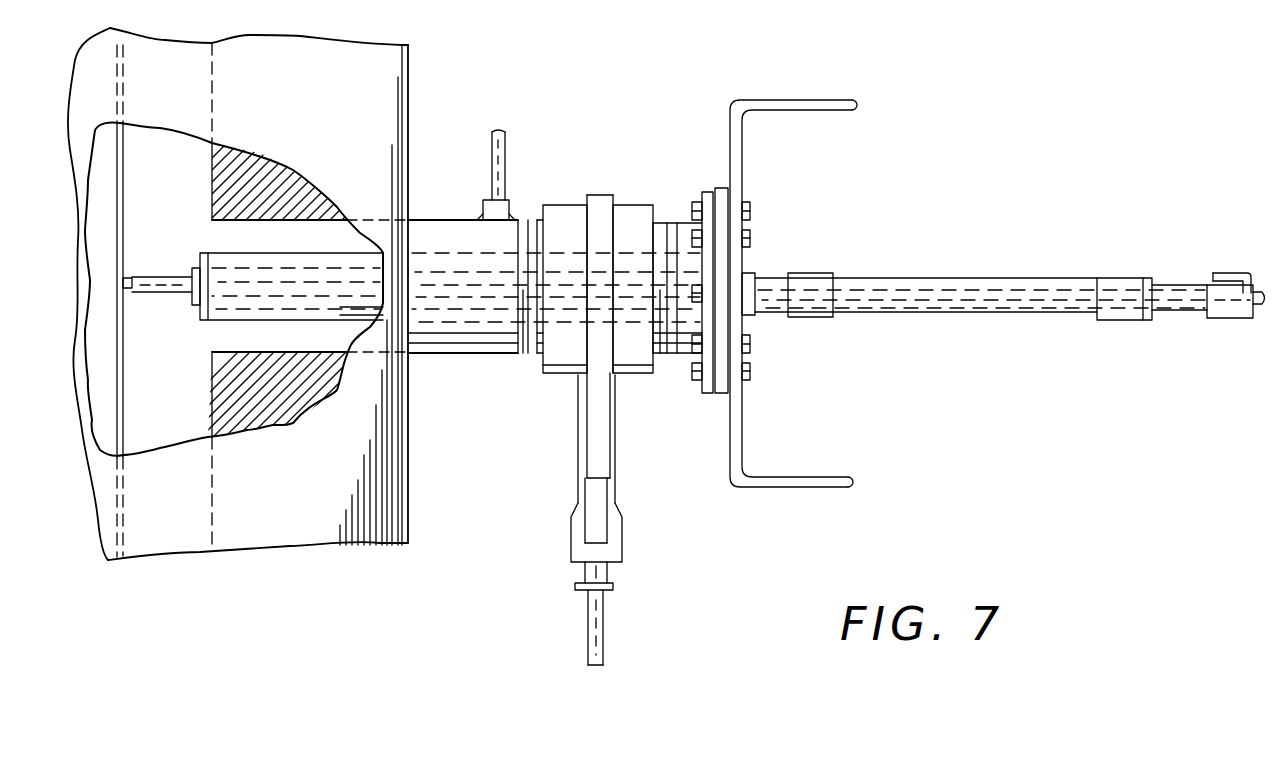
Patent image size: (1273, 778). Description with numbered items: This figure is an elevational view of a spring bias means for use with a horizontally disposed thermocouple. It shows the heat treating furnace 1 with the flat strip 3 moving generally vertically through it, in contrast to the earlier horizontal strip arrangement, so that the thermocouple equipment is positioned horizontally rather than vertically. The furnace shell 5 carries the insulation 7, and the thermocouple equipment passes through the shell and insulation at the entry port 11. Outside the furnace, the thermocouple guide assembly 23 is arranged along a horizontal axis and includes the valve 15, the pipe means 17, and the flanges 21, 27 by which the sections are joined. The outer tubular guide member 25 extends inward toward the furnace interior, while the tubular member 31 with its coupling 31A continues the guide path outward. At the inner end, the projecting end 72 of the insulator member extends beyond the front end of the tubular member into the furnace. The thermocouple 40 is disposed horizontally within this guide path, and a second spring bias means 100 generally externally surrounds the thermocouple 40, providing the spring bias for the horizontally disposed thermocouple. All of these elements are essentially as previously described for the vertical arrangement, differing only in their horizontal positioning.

The heat treating furnace 1 is at (408, 88).
The flat strip 3 is at (123, 383).
The furnace shell 5 is at (403, 514).
The insulation 7 is at (318, 184).
The entry port 11 is at (482, 362).
The valve 15 is at (626, 553).
The pipe means 17 is at (497, 160).
The flange 21 is at (702, 197).
The thermocouple guide assembly 23 is at (829, 490).
The outer tubular guide member 25 is at (226, 252).
The flange 27 is at (740, 258).
The tubular member 31 is at (322, 302).
The coupling 31A is at (752, 312).
The thermocouple 40 is at (1253, 288).
The projecting end 72 is at (127, 292).
The second spring bias means 100 is at (1066, 277).